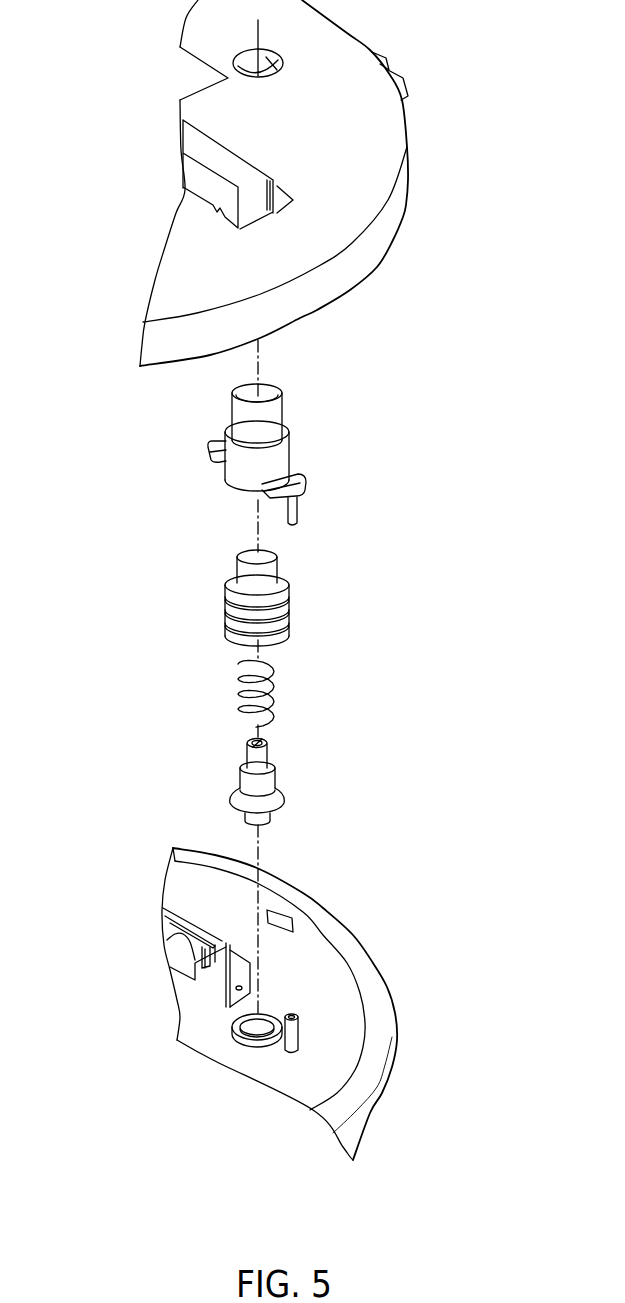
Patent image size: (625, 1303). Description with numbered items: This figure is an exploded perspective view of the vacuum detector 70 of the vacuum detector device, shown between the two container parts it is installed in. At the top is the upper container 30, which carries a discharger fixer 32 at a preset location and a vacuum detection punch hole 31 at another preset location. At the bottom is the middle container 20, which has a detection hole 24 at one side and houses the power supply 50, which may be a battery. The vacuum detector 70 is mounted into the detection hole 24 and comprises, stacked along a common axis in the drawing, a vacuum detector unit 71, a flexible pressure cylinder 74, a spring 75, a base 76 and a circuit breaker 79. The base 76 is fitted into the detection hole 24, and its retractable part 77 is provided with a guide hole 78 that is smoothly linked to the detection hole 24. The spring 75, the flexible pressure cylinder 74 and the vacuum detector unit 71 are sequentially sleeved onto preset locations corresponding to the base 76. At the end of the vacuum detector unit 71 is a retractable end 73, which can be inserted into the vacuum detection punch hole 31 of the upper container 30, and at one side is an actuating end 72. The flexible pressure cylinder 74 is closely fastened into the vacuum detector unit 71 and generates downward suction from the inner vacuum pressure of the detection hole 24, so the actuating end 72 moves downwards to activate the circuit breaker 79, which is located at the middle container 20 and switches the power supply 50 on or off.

The middle container 20 is at (375, 992).
The detection hole 24 is at (255, 1032).
The upper container 30 is at (368, 172).
The vacuum detection punch hole 31 is at (273, 60).
The discharger fixer 32 is at (207, 178).
The power supply 50 is at (187, 998).
The vacuum detector 70 is at (392, 368).
The vacuum detector unit 71 is at (270, 461).
The actuating end 72 is at (214, 450).
The retractable end 73 is at (273, 412).
The flexible pressure cylinder 74 is at (280, 597).
The spring 75 is at (275, 680).
The base 76 is at (267, 787).
The retractable part 77 is at (258, 743).
The guide hole 78 is at (257, 743).
The circuit breaker 79 is at (232, 948).